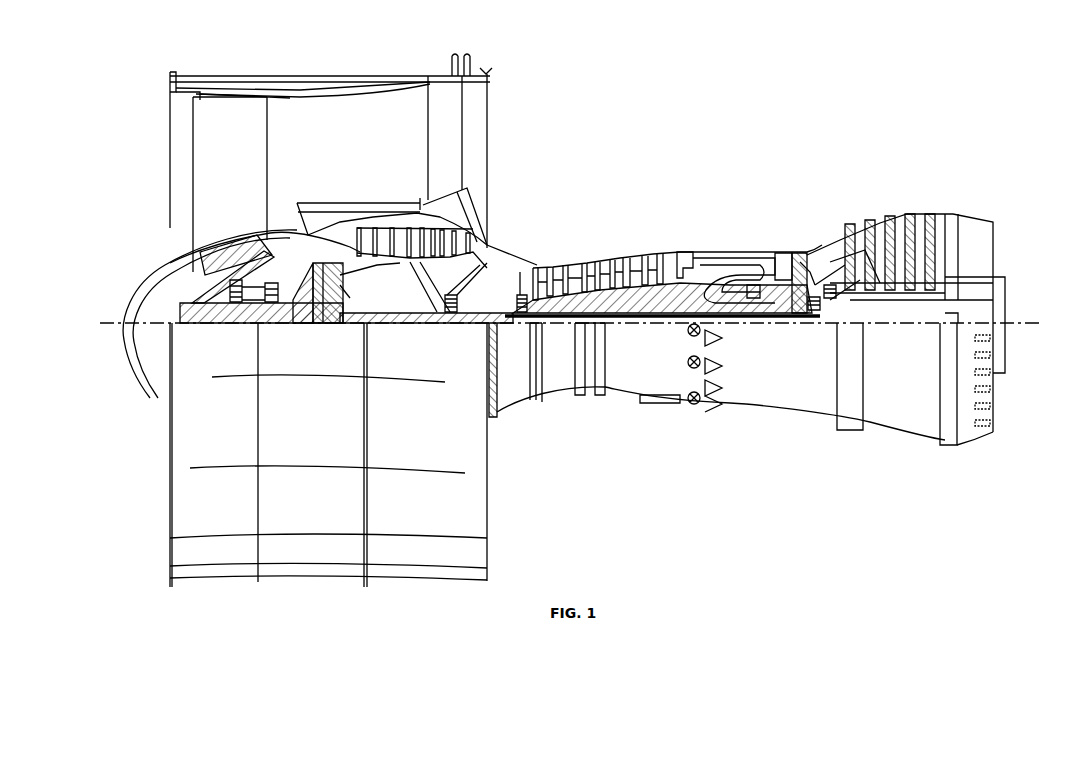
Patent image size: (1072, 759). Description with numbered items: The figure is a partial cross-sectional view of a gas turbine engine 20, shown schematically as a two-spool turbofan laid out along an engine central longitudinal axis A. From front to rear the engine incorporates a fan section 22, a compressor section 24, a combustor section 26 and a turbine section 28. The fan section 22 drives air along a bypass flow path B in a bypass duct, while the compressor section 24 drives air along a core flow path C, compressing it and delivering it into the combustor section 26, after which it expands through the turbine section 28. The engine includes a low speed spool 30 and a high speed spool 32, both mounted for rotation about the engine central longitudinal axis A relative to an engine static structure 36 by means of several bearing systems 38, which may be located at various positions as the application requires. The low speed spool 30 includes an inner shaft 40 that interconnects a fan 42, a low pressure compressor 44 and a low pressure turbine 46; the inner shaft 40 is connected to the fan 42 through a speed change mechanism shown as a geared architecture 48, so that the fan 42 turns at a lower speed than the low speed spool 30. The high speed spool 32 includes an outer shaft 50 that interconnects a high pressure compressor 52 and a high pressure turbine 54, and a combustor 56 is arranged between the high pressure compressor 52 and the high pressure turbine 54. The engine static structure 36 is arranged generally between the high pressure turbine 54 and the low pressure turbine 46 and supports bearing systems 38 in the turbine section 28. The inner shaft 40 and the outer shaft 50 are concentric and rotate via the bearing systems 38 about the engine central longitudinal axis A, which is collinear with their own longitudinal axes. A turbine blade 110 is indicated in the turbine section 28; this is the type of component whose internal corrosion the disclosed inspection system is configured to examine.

The gas turbine engine 20 is at (907, 83).
The fan section 22 is at (244, 72).
The compressor section 24 is at (605, 192).
The combustor section 26 is at (740, 185).
The turbine section 28 is at (845, 173).
The low speed spool 30 is at (635, 330).
The high speed spool 32 is at (690, 254).
The engine static structure 36 is at (660, 410).
The bearing systems 38 is at (212, 318).
The inner shaft 40 is at (503, 330).
The fan 42 is at (237, 174).
The low pressure compressor 44 is at (465, 200).
The low pressure turbine 46 is at (902, 215).
The geared architecture 48 is at (330, 305).
The outer shaft 50 is at (722, 327).
The high pressure compressor 52 is at (578, 264).
The high pressure turbine 54 is at (785, 251).
The combustor 56 is at (736, 258).
The turbine blade 110 is at (853, 210).
The engine central longitudinal axis A is at (1020, 322).
The bypass flow path B is at (385, 143).
The core flow path C is at (305, 237).